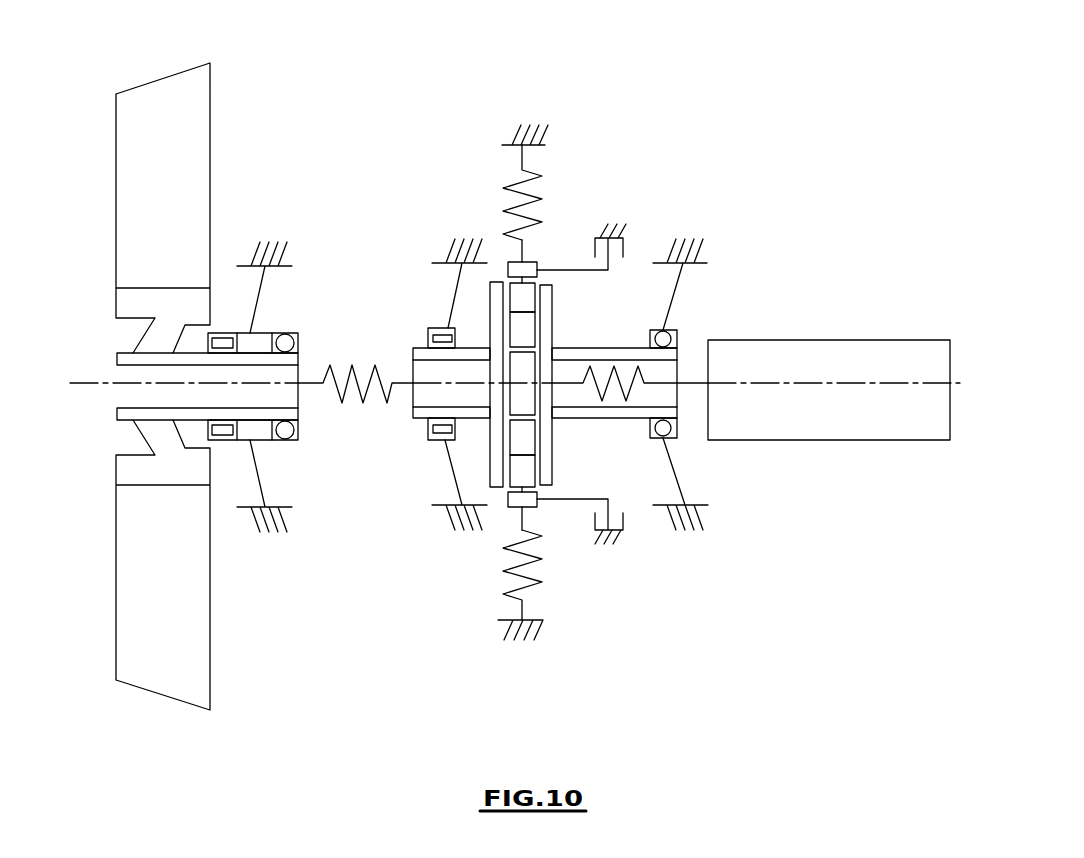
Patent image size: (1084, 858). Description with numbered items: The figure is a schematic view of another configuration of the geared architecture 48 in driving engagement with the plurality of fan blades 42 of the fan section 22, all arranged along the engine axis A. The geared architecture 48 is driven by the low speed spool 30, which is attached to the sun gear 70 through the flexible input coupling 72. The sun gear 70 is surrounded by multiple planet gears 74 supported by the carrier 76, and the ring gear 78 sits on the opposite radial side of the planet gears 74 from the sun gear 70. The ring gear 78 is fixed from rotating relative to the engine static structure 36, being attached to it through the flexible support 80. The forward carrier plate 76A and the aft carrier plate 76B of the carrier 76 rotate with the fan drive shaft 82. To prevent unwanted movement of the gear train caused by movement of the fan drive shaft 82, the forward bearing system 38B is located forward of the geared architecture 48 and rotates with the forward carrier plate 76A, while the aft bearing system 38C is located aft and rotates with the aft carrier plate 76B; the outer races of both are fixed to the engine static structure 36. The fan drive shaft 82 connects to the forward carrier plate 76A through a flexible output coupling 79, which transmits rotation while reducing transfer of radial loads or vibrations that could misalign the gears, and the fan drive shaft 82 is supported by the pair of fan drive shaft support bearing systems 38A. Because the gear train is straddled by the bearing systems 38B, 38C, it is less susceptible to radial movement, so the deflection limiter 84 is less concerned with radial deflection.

The fan section 22 is at (171, 370).
The fan blades 42 is at (179, 201).
The fan drive shaft 82 is at (117, 360).
The engine central longitudinal axis A is at (83, 384).
The engine static structure 36 is at (290, 266).
The fan drive shaft support bearing systems 38A is at (225, 333).
The forward bearing system 38B is at (436, 328).
The aft bearing system 38C is at (676, 332).
The flexible output coupling 79 is at (362, 403).
The sun gear 70 is at (535, 393).
The geared architecture 48 is at (540, 380).
The carrier 76 is at (540, 426).
The forward carrier plate 76A is at (497, 487).
The aft carrier plate 76B is at (580, 347).
The planet gears 74 is at (525, 474).
The ring gear 78 is at (537, 262).
The flexible support 80 is at (540, 178).
The deflection limiter 84 is at (636, 198).
The flexible input coupling 72 is at (598, 388).
The low speed spool 30 is at (785, 440).